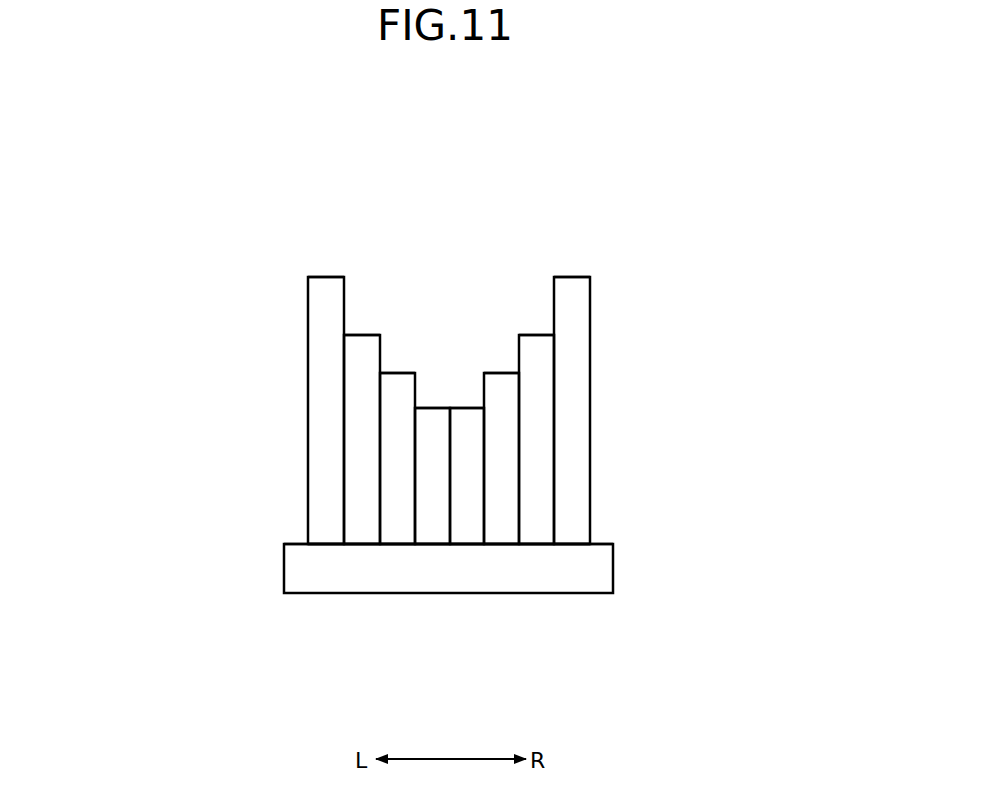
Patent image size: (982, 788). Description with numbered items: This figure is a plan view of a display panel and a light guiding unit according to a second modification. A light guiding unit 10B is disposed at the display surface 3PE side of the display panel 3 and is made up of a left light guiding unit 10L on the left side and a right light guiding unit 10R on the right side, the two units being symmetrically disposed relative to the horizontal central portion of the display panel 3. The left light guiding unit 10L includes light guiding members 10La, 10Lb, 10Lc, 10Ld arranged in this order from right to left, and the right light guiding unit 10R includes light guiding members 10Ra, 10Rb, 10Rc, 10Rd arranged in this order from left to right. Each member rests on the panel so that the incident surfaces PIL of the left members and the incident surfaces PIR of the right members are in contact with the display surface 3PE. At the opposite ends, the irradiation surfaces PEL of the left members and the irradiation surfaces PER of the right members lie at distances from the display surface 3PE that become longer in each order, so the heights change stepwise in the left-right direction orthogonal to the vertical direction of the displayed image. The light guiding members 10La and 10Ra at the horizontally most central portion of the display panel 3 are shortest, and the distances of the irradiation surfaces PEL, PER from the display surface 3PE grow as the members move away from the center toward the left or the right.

The light guiding unit 10B is at (240, 276).
The left light guiding unit 10L is at (137, 362).
The right light guiding unit 10R is at (763, 362).
The light guiding member 10La is at (427, 440).
The light guiding member 10Lb is at (390, 465).
The light guiding member 10Lc is at (358, 479).
The light guiding member 10Ld is at (323, 521).
The light guiding member 10Ra is at (467, 442).
The light guiding member 10Rb is at (503, 468).
The light guiding member 10Rc is at (533, 482).
The light guiding member 10Rd is at (578, 505).
The irradiation surfaces PEL is at (430, 406).
The irradiation surfaces PER is at (471, 406).
The incident surfaces PIL is at (429, 546).
The incident surfaces PIR is at (572, 546).
The display panel 3 is at (599, 593).
The display surface 3PE is at (604, 539).